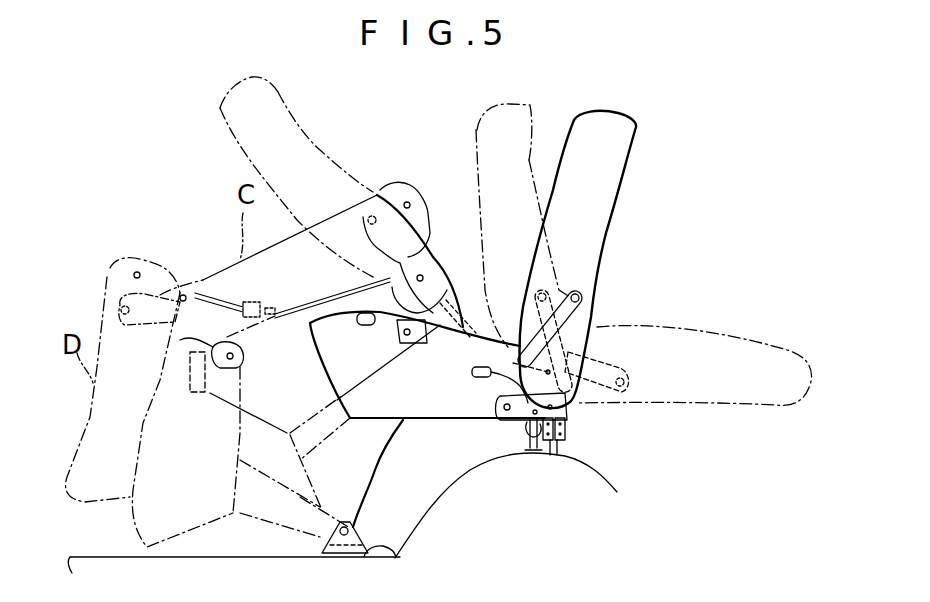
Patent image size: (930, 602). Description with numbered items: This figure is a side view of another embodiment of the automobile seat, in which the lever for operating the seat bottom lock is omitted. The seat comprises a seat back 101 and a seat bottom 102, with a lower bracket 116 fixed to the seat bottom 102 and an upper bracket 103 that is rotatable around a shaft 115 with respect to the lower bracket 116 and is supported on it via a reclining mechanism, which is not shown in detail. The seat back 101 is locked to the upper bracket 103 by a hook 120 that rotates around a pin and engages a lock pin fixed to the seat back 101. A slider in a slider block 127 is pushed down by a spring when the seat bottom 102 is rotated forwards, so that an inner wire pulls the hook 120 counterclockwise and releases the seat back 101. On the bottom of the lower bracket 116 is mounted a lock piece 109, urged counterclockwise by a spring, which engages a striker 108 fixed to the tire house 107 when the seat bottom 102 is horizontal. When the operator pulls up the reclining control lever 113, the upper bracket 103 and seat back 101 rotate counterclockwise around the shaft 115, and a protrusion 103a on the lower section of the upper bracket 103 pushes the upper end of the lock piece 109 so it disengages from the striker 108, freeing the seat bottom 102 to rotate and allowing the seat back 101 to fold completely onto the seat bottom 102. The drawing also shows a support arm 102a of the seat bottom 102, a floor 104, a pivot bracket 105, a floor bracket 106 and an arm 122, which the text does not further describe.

The seat back 101 is at (600, 188).
The seat bottom 102 is at (433, 413).
The cushion support leg 102a is at (368, 480).
The upper bracket 103 is at (602, 292).
The protrusion 103a is at (500, 403).
The floor 104 is at (226, 557).
The pivot bracket 105 is at (350, 530).
The floor bracket 106 is at (396, 557).
The tire house 107 is at (617, 513).
The striker 108 is at (533, 453).
The lock piece 109 is at (520, 445).
The reclining control lever 113 is at (470, 371).
The shaft 115 is at (513, 363).
The lower bracket 116 is at (503, 420).
The hook 120 is at (585, 308).
The arm 122 is at (585, 358).
The slider block 127 is at (567, 433).